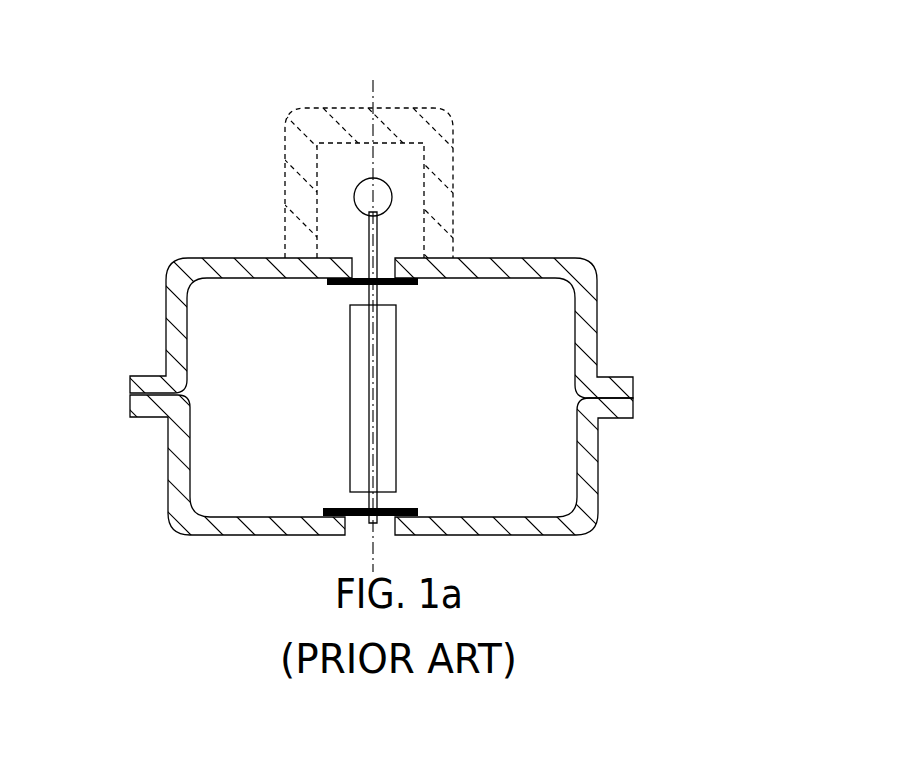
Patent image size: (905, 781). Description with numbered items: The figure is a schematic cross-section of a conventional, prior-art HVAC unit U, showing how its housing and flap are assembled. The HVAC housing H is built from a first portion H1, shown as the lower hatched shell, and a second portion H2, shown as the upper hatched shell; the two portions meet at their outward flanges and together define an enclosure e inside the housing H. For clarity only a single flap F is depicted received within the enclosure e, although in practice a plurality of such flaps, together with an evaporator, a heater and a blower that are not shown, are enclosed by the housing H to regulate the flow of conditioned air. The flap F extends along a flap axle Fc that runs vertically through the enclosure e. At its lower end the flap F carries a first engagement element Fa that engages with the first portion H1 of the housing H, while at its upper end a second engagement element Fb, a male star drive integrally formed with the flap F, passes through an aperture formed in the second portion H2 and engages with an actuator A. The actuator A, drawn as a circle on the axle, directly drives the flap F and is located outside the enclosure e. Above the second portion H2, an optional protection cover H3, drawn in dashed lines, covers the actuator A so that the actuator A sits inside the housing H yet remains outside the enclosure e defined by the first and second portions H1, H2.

The HVAC unit U is at (570, 129).
The HVAC housing H is at (598, 307).
The first portion H1 is at (182, 458).
The second portion H2 is at (180, 293).
The protection cover H3 is at (438, 137).
The actuator A is at (383, 197).
The flap F is at (388, 462).
The first engagement element Fa is at (367, 522).
The second engagement element Fb is at (368, 213).
The flap axle Fc is at (377, 243).
The enclosure e is at (543, 442).